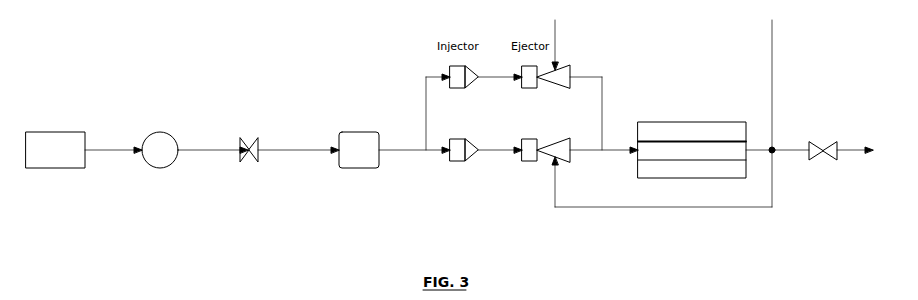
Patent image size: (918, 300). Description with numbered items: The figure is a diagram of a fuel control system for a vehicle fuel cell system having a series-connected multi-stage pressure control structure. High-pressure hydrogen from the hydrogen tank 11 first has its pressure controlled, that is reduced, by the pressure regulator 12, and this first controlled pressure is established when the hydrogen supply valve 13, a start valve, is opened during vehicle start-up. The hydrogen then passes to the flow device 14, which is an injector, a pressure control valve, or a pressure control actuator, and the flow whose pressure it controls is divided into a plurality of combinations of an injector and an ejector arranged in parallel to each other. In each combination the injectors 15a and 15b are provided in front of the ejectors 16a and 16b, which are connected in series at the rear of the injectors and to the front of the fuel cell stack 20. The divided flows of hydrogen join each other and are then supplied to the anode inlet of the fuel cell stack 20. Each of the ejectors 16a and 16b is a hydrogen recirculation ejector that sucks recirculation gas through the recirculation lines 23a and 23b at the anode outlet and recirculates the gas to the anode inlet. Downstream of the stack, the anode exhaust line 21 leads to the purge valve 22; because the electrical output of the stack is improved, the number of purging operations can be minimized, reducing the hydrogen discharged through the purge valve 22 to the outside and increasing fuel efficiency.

The hydrogen tank 11 is at (53, 168).
The pressure regulator 12 is at (158, 168).
The hydrogen supply valve (start valve) 13 is at (249, 163).
The flow device (injector/pressure control valve/pressure control actuator) 14 is at (357, 168).
The injector 15a is at (455, 88).
The injector 15b is at (455, 162).
The ejector 16a is at (527, 88).
The ejector 16b is at (527, 162).
The fuel cell stack 20 is at (660, 178).
The anode exhaust line 21 is at (797, 150).
The purge valve 22 is at (827, 160).
The recirculation line 23a is at (772, 45).
The recirculation line 23b is at (728, 207).